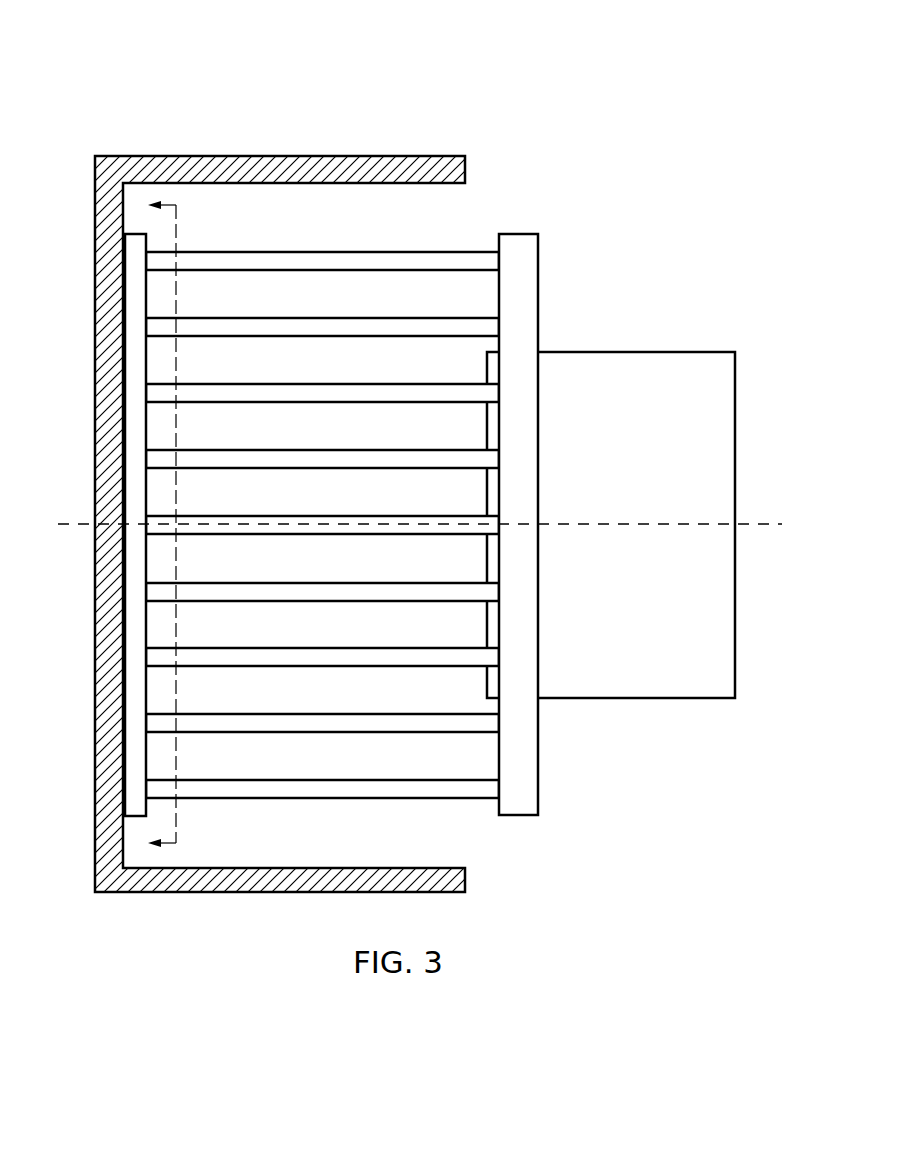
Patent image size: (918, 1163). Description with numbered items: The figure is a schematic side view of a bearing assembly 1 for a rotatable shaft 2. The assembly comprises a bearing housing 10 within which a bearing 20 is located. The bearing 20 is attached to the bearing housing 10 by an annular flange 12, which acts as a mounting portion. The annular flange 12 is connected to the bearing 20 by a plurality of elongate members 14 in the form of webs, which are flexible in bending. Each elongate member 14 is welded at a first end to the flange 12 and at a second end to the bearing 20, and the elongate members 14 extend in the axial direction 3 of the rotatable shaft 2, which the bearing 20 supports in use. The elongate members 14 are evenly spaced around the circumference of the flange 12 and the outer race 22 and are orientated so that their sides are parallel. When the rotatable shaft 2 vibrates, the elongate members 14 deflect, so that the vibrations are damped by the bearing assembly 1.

The bearing assembly 1 is at (666, 36).
The bearing housing 10 is at (398, 168).
The annular flange 12 is at (131, 249).
The elongate members 14 is at (400, 326).
The bearing 20 is at (395, 523).
The outer race 22 is at (525, 292).
The rotatable shaft 2 is at (642, 373).
The axial direction 3 is at (781, 524).